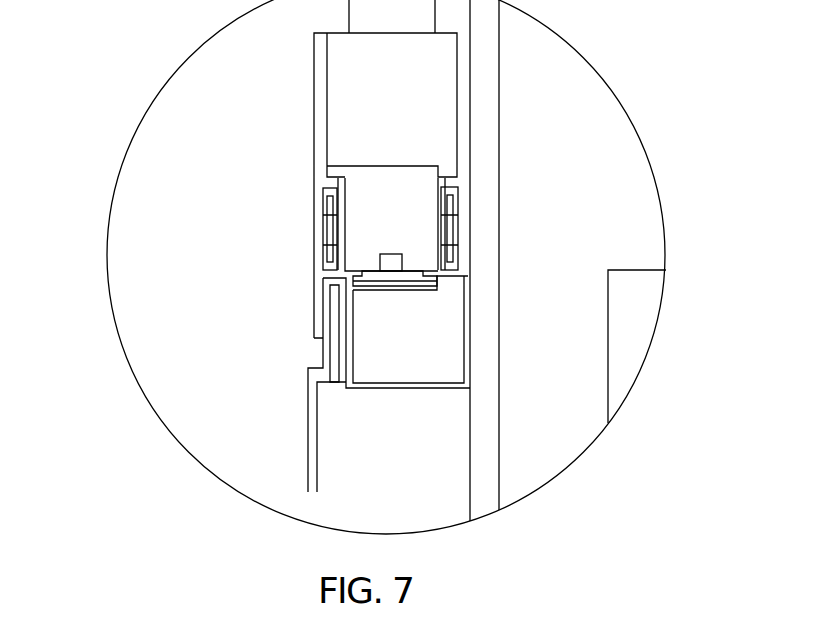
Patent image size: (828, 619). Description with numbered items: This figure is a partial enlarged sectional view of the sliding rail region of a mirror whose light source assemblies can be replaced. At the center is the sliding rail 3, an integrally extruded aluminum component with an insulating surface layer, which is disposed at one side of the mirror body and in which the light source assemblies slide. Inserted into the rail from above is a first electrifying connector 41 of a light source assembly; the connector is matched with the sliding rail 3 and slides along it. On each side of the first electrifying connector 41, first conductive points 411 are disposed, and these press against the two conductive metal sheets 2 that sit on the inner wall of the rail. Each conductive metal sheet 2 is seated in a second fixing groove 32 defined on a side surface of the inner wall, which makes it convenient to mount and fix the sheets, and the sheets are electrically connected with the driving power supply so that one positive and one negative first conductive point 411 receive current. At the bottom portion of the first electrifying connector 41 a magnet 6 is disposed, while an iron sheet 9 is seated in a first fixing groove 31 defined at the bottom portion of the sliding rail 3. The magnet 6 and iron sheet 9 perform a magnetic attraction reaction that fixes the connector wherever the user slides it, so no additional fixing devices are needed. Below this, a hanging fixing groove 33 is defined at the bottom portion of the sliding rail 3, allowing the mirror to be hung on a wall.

The conductive metal sheet 2 is at (332, 230).
The sliding rail 3 is at (320, 130).
The magnet 6 is at (417, 283).
The iron sheet 9 is at (402, 290).
The first fixing groove 31 is at (367, 290).
The second fixing groove 32 is at (450, 258).
The hanging fixing groove 33 is at (358, 405).
The first electrifying connector 41 is at (415, 146).
The first conductive point 411 is at (340, 206).